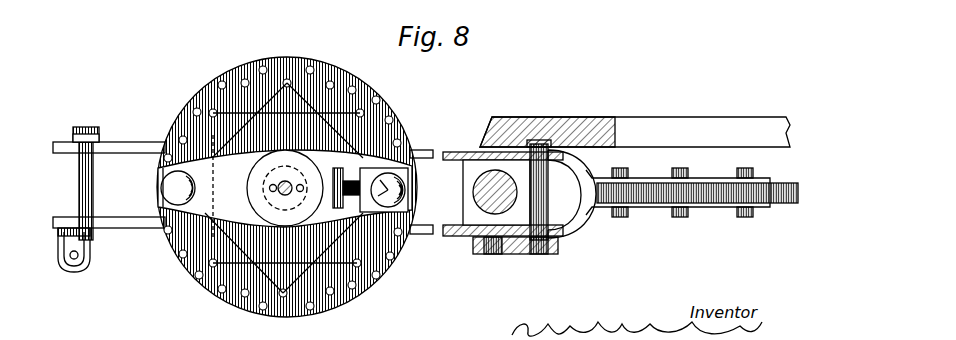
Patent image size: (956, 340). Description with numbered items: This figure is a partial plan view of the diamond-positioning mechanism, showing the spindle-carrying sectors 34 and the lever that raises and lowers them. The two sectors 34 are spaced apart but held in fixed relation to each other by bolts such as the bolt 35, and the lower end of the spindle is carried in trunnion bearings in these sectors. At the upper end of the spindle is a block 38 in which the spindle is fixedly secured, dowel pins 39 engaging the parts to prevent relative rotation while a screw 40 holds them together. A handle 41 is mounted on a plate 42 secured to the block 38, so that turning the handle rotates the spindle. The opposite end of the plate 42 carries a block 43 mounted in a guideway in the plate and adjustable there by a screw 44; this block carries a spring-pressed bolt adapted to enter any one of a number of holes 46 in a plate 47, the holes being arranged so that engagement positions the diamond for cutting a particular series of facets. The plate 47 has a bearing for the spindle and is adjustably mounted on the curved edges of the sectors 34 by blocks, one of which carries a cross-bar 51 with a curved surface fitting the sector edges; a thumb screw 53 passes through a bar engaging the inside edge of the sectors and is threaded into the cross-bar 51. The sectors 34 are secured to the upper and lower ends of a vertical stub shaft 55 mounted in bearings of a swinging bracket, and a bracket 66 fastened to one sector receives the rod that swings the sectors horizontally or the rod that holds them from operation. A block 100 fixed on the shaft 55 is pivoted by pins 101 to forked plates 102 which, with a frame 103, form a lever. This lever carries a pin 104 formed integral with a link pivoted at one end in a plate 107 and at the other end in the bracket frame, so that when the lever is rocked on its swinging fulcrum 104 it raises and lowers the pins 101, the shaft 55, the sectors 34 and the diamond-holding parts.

The sectors 34 is at (115, 148).
The bolt 35 is at (96, 186).
The block 38 is at (258, 178).
The dowel pins 39 is at (300, 183).
The screw 40 is at (283, 192).
The handle 41 is at (168, 188).
The plate 42 is at (205, 198).
The block 43 is at (363, 200).
The screw 44 is at (339, 210).
The holes 46 is at (352, 88).
The plate 47 is at (252, 68).
The cross-bar 51 is at (452, 202).
The thumb screw 53 is at (602, 118).
The vertical stub shaft 55 is at (484, 204).
The bracket 66 is at (72, 274).
The block 100 is at (473, 167).
The pins 101 is at (500, 146).
The forked plates 102 is at (558, 224).
The frame 103 is at (722, 196).
The pin 104 is at (546, 142).
The plate 107 is at (508, 253).